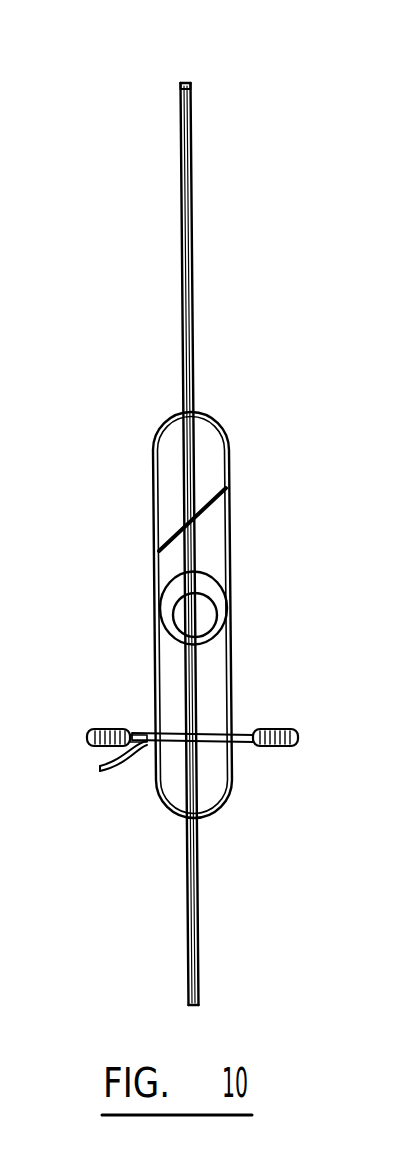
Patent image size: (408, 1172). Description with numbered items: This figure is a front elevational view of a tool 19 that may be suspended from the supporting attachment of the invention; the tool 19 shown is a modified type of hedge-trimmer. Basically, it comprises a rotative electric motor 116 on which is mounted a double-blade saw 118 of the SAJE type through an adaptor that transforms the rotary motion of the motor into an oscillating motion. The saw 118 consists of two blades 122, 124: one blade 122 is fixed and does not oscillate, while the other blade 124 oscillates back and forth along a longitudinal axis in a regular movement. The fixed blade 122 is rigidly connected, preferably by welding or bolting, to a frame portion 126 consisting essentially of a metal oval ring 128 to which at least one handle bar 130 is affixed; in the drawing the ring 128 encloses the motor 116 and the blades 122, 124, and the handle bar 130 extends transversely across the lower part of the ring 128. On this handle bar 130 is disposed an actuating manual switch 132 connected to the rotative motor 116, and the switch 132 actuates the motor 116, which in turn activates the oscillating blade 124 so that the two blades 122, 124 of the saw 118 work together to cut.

The tool 19 is at (135, 475).
The rotative electric motor 116 is at (200, 612).
The double-blade saw 118 is at (186, 80).
The fixed blade 122 is at (193, 242).
The oscillating blade 124 is at (182, 300).
The frame portion 126 is at (230, 479).
The metal oval ring 128 is at (226, 437).
The handle bar 130 is at (240, 731).
The actuating manual switch 132 is at (100, 771).